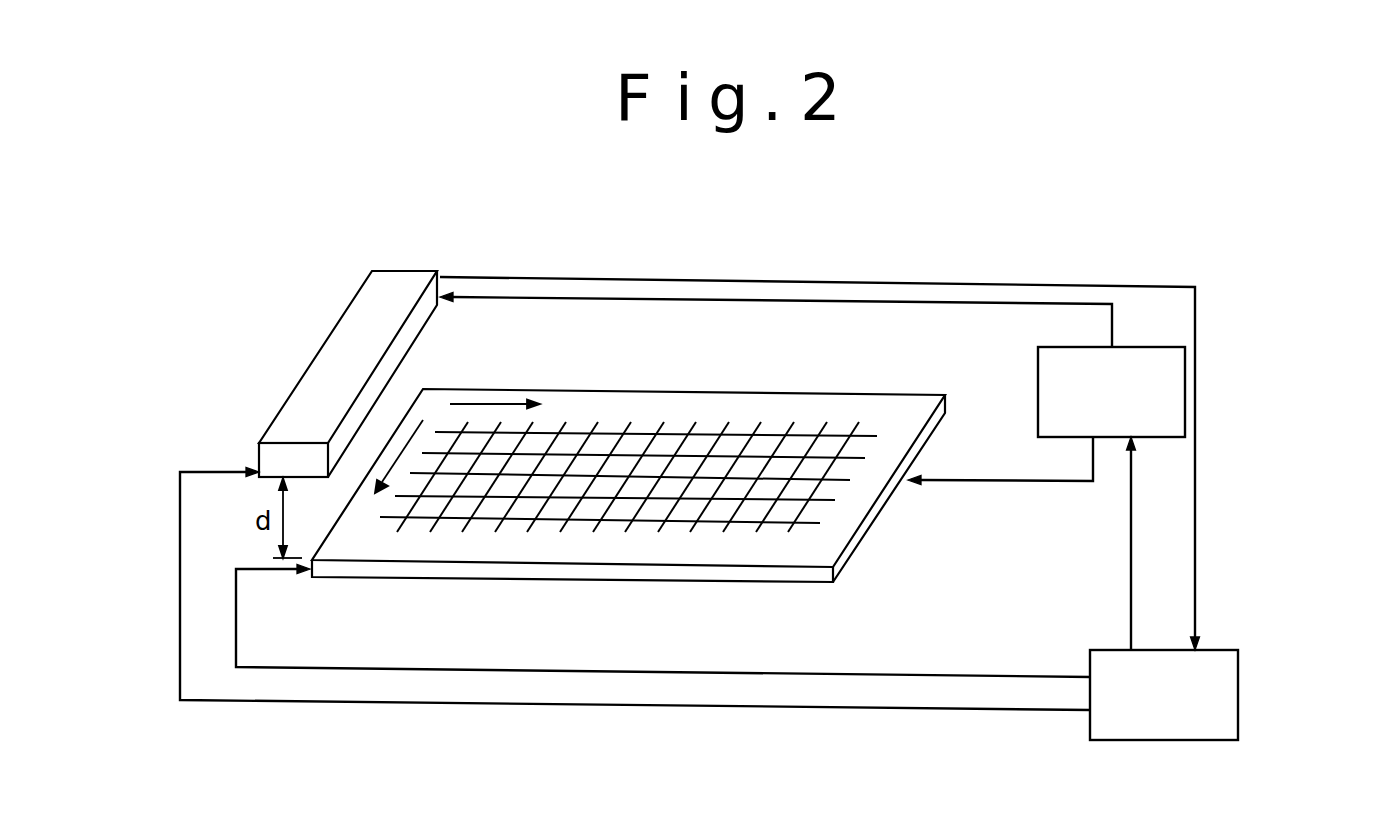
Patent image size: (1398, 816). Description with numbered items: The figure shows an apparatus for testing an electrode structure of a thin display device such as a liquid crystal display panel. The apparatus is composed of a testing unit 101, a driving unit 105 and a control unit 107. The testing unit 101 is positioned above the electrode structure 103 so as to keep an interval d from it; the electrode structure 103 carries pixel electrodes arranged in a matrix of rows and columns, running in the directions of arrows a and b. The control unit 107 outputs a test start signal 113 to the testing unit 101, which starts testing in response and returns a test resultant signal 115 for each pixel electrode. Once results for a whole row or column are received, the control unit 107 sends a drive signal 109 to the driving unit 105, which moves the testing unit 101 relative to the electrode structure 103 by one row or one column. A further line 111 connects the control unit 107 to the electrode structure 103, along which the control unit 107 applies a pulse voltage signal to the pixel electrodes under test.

The testing unit 101 is at (367, 293).
The electrode structure 103 is at (632, 552).
The driving unit 105 is at (1185, 372).
The control unit 107 is at (1238, 677).
The drive signal 109 is at (1131, 521).
The signal line from control unit to stage 111 is at (425, 670).
The test start signal 113 is at (180, 578).
The test resultant signal 115 is at (810, 284).